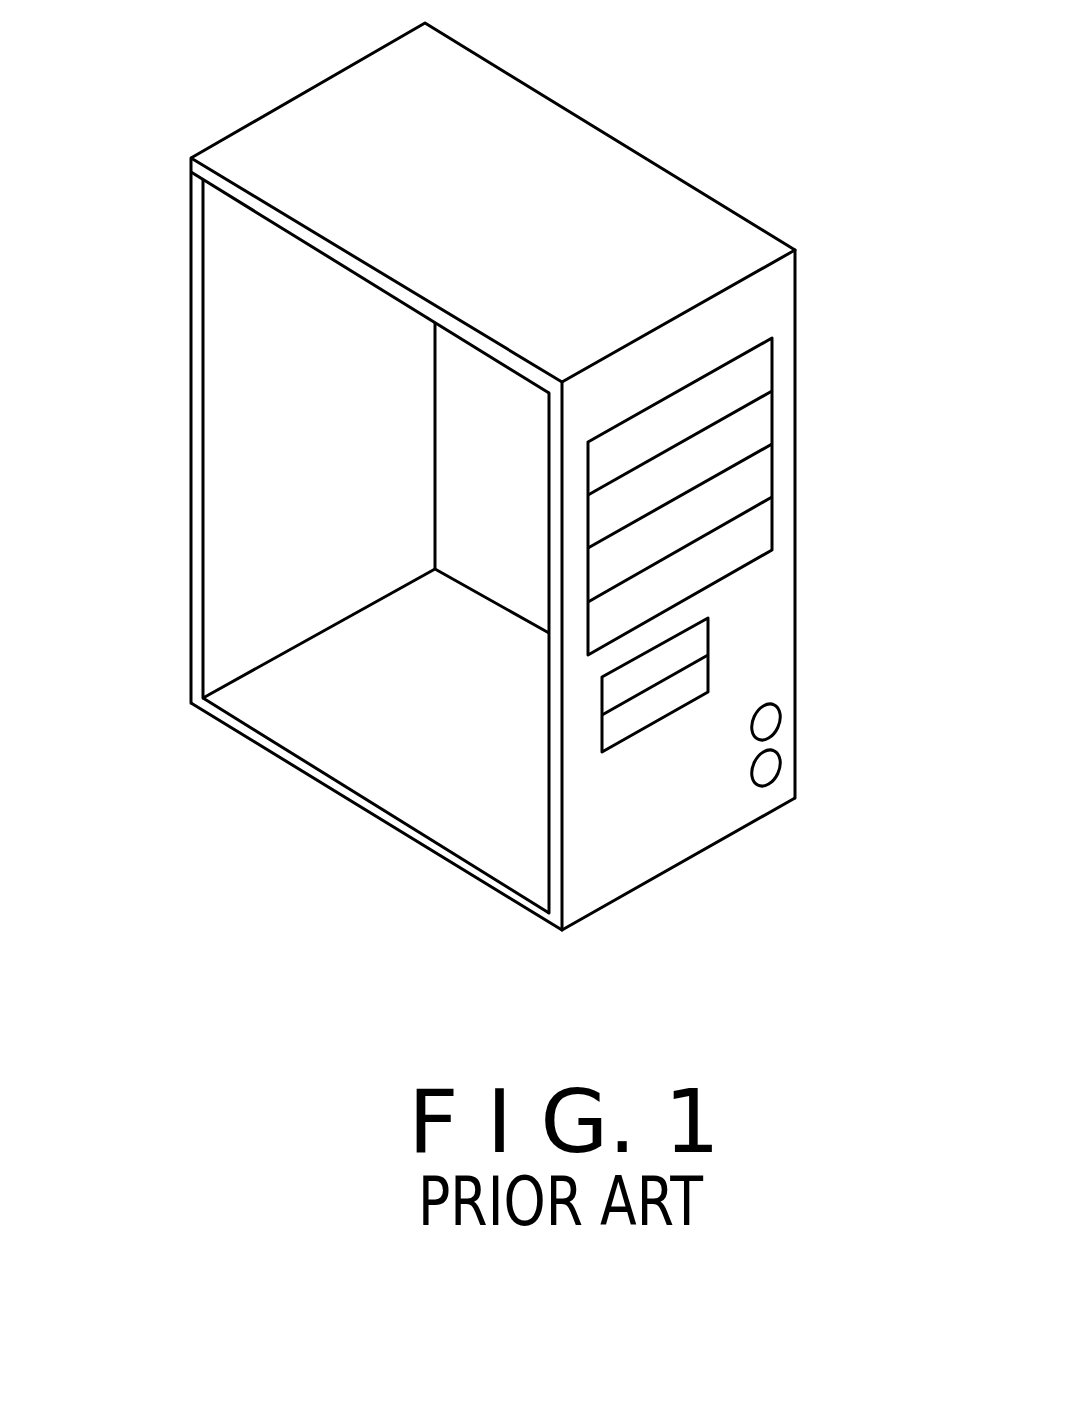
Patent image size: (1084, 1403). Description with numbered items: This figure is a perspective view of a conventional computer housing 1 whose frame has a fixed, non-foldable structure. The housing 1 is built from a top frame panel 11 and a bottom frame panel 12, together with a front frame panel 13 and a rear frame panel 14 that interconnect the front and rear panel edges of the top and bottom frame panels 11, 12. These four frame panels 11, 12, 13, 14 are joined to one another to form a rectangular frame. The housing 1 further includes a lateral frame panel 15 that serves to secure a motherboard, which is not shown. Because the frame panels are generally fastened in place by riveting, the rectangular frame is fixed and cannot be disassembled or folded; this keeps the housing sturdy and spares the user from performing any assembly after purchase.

The computer housing 1 is at (775, 195).
The top frame panel 11 is at (587, 148).
The bottom frame panel 12 is at (375, 788).
The front frame panel 13 is at (788, 675).
The rear frame panel 14 is at (240, 552).
The lateral frame panel 15 is at (462, 407).